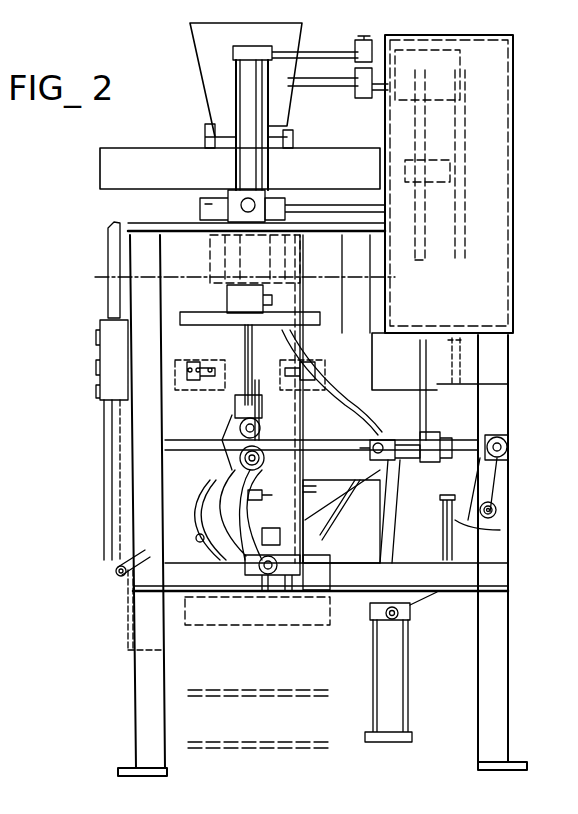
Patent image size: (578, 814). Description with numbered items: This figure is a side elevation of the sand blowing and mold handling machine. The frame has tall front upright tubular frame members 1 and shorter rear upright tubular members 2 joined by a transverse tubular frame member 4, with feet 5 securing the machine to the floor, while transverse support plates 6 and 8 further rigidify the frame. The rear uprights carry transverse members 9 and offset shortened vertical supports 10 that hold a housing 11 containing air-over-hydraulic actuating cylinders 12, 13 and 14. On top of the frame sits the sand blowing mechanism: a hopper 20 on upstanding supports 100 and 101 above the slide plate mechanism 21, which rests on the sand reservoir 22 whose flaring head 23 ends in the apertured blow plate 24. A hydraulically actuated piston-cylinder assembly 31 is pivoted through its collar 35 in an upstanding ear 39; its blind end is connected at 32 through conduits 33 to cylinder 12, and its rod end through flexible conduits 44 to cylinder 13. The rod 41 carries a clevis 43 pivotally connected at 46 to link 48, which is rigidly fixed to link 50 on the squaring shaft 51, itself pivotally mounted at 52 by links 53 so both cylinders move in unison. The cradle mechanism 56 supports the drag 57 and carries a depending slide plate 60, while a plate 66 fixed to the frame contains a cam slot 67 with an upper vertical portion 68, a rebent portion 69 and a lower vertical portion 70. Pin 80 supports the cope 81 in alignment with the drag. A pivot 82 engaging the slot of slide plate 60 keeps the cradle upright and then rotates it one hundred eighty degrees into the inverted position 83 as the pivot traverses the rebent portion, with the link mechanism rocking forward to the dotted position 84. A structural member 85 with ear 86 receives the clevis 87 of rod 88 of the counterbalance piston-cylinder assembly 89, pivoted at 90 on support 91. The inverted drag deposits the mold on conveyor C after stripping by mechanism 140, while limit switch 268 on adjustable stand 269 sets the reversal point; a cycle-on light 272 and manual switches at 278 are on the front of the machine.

The upright tubular structural frame members 1 is at (148, 688).
The upright tubular members 2 is at (500, 656).
The transverse tubular frame member 4 is at (490, 573).
The bed plates or feet 5 is at (133, 768).
The transverse support plate 6 is at (150, 640).
The transverse support plate 8 is at (172, 253).
The transverse members 9 is at (470, 385).
The offset upright shortened vertical supports 10 is at (380, 437).
The housing 11 is at (505, 298).
The air-over-hydraulic actuating cylinder 12 is at (462, 121).
The air-over-hydraulic actuating cylinder 13 is at (443, 159).
The air-over-hydraulic actuating cylinder 14 is at (405, 174).
The hopper 20 is at (213, 67).
The slide plate mechanism 21 is at (170, 147).
The sand reservoir 22 is at (288, 213).
The flaring head 23 is at (300, 306).
The blow plate 24 is at (185, 326).
The hydraulically actuated piston-cylinder assembly 31 is at (278, 92).
The blind end connection 32 is at (286, 55).
The conduits 33 is at (326, 64).
The collar 35 is at (222, 195).
The upstanding ear 39 is at (272, 194).
The rod 41 is at (242, 349).
The clevis 43 is at (234, 406).
The flexible conduits 44 is at (310, 403).
The pivotal connection 46 is at (233, 444).
The link 48 is at (199, 442).
The link 50 is at (380, 437).
The squaring shaft 51 is at (496, 441).
The pivot 52 is at (500, 509).
The links 53 is at (490, 488).
The cradle mechanism 56 is at (318, 487).
The drag 57 is at (185, 451).
The depending slide plate 60 is at (303, 497).
The plate 66 is at (196, 541).
The cam slot 67 is at (282, 540).
The upper vertical portion 68 is at (258, 383).
The rebent portion 69 is at (212, 532).
The lower vertical portion 70 is at (272, 574).
The aligning and supporting pin 80 is at (197, 363).
The cope 81 is at (322, 354).
The pivot 82 is at (266, 500).
The inverted position 83 is at (242, 633).
The dotted line position 84 is at (358, 547).
The plate or structural member 85 is at (420, 440).
The ear 86 is at (410, 446).
The clevis 87 is at (350, 510).
The rod 88 is at (395, 546).
The piston-cylinder assembly 89 is at (393, 676).
The pivotal mounting 90 is at (398, 616).
The support 91 is at (400, 612).
The upstanding support 100 is at (205, 138).
The upstanding support 101 is at (293, 137).
The core stripping mechanism 140 is at (119, 555).
The limit switch 268 is at (505, 525).
The adjustable stand 269 is at (470, 541).
The cycle-on light 272 is at (96, 341).
The manual switch location 278 is at (81, 401).
The conveyor C is at (282, 679).